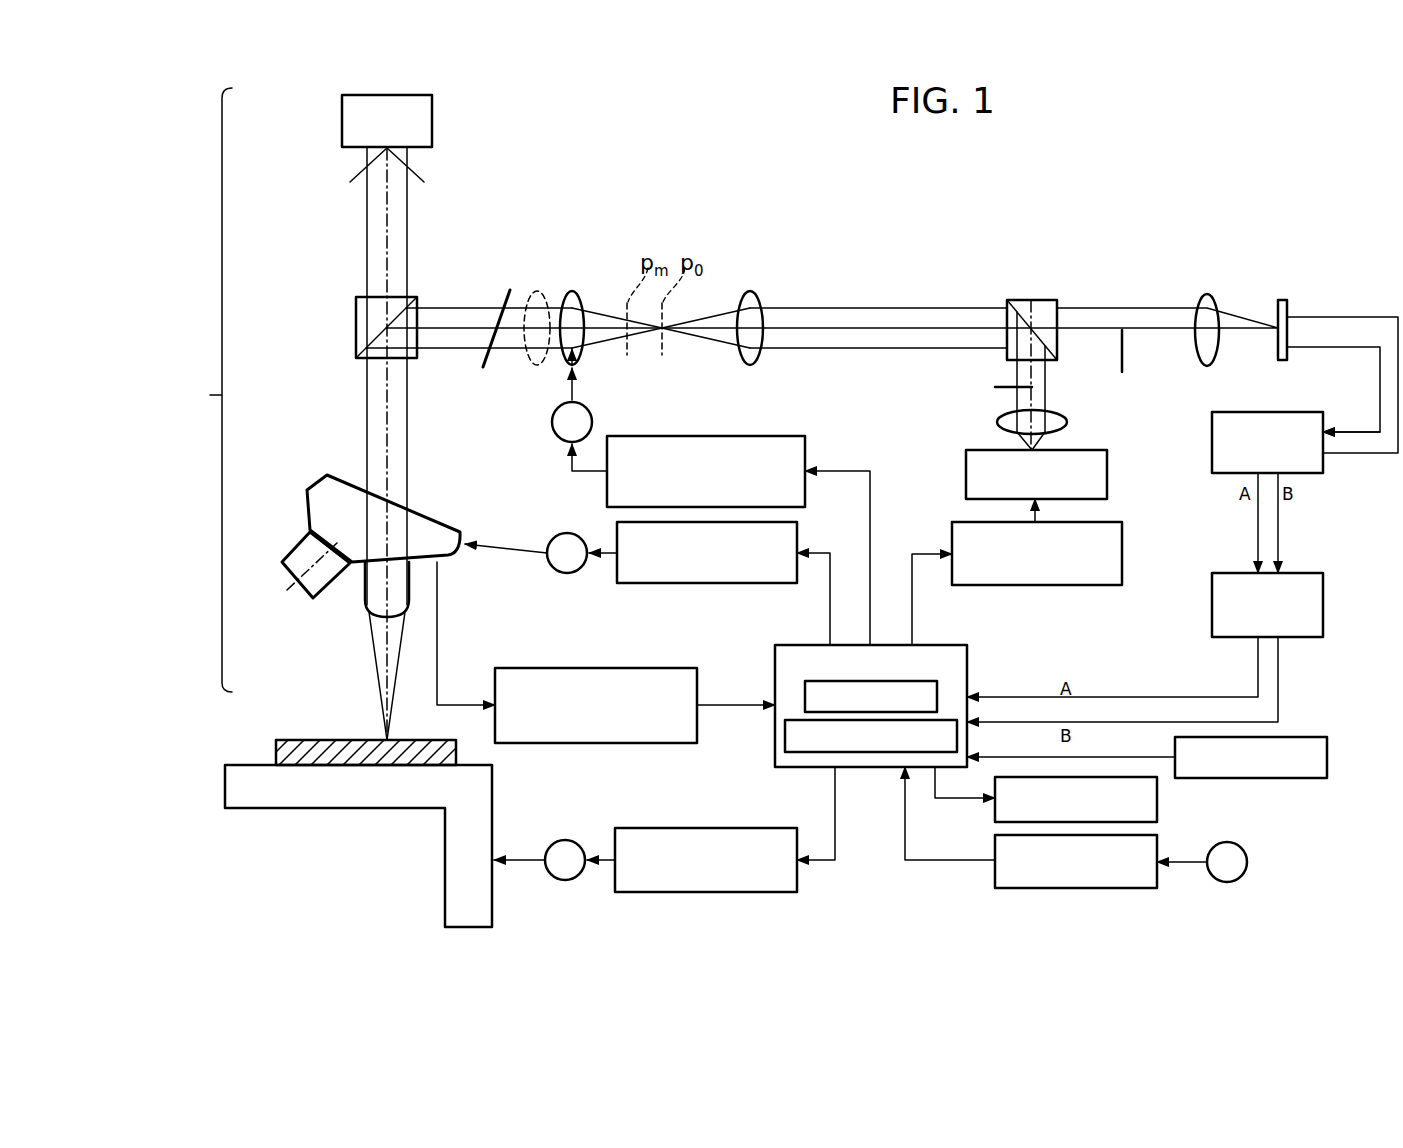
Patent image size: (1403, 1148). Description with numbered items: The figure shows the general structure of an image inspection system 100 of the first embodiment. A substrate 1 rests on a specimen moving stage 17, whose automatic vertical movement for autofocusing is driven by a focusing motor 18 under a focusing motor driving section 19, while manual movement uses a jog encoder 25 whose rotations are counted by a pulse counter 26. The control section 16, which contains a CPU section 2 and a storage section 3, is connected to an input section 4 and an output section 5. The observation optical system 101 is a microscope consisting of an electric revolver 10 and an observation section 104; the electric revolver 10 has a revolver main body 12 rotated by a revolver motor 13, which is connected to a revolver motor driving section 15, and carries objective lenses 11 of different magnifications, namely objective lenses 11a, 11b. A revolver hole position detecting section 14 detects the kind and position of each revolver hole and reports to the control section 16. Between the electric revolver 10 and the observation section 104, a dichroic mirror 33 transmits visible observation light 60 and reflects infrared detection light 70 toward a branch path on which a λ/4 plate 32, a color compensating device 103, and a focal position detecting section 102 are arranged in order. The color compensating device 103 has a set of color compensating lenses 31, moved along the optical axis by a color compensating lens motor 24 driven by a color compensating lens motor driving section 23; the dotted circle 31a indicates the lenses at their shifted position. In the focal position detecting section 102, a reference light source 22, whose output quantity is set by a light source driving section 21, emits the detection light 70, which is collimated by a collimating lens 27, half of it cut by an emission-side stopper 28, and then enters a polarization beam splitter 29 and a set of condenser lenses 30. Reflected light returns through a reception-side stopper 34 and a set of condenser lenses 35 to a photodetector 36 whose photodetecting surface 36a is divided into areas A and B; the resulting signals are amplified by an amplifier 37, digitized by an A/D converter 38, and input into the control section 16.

The substrate 1 is at (276, 750).
The CPU section 2 is at (805, 694).
The storage section 3 is at (785, 738).
The input section 4 is at (1327, 757).
The output section 5 is at (1157, 798).
The electric revolver 10 is at (332, 445).
The objective lenses 11 is at (312, 612).
The objective lens 11a is at (365, 612).
The objective lens 11b is at (320, 600).
The revolver main body 12 is at (338, 583).
The revolver motor 13 is at (567, 533).
The revolver hole position detecting section 14 is at (530, 668).
The revolver motor driving section 15 is at (698, 583).
The control section 16 is at (846, 677).
The specimen moving stage 17 is at (492, 795).
The focusing motor 18 is at (565, 880).
The focusing motor driving section 19 is at (705, 828).
The light source driving section 21 is at (1122, 556).
The reference light source 22 is at (1107, 476).
The color compensating lens motor driving section 23 is at (735, 436).
The color compensating lens motor 24 is at (592, 414).
The jog encoder 25 is at (1247, 862).
The pulse counter 26 is at (1045, 888).
The collimating lens 27 is at (1068, 420).
The emission-side stopper 28 is at (995, 387).
The polarization beam splitter 29 is at (1032, 299).
The condenser lenses 30 is at (758, 296).
The color compensating lenses 31 is at (582, 300).
The color compensating lenses (moved position) 31a is at (537, 366).
The λ/4 plate 32 is at (505, 290).
The dichroic mirror 33 is at (356, 315).
The reception-side stopper 34 is at (1122, 372).
The condenser lenses 35 is at (1200, 297).
The photodetector 36 is at (1311, 335).
The photodetecting surface 36a is at (1275, 302).
The amplifier 37 is at (1252, 412).
The A/D converter 38 is at (1300, 573).
The observation light 60 is at (418, 240).
The detection light 70 is at (1090, 298).
The image inspection system 100 is at (773, 210).
The observation optical system 101 is at (199, 390).
The focal position detecting section 102 is at (1212, 228).
The color compensating device 103 is at (573, 266).
The observation section 104 is at (434, 122).